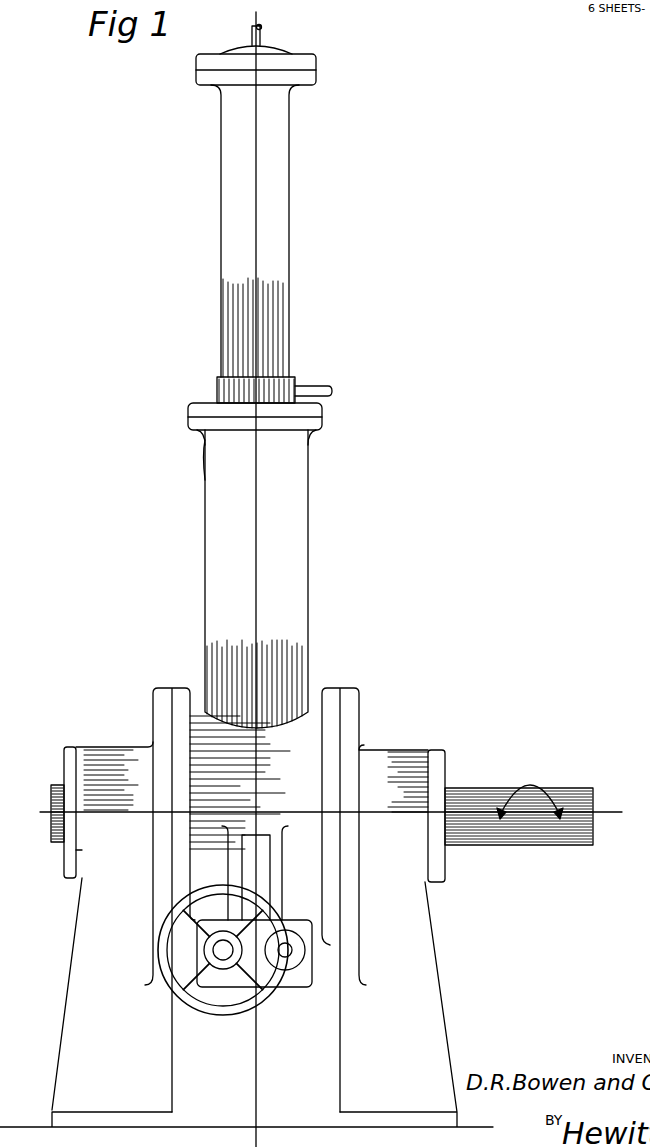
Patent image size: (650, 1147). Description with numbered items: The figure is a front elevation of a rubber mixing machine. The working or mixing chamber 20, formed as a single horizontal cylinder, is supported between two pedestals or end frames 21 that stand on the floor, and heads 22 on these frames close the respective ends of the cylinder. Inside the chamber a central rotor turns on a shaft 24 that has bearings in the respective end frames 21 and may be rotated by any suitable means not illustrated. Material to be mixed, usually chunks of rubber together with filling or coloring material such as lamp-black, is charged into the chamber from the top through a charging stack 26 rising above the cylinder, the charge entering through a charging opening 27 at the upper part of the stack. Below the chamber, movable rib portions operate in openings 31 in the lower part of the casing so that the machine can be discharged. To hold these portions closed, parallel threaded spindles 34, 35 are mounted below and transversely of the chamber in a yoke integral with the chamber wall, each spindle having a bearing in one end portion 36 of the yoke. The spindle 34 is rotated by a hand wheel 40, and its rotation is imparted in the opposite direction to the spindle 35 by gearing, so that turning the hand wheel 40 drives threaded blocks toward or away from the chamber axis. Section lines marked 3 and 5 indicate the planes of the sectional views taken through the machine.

The working or mixing chamber 20 is at (246, 782).
The pedestals or end frames 21 is at (95, 1012).
The heads 22 is at (160, 690).
The shaft 24 is at (473, 787).
The charging stack 26 is at (310, 490).
The charging opening 27 is at (205, 462).
The openings 31 is at (262, 862).
The threaded spindle 34 is at (225, 957).
The threaded spindle 35 is at (292, 967).
The end portion of the yoke 36 is at (307, 978).
The hand wheel 40 is at (206, 1007).
The section line 3- 3 is at (254, 630).
The section line 5- 5 is at (145, 930).